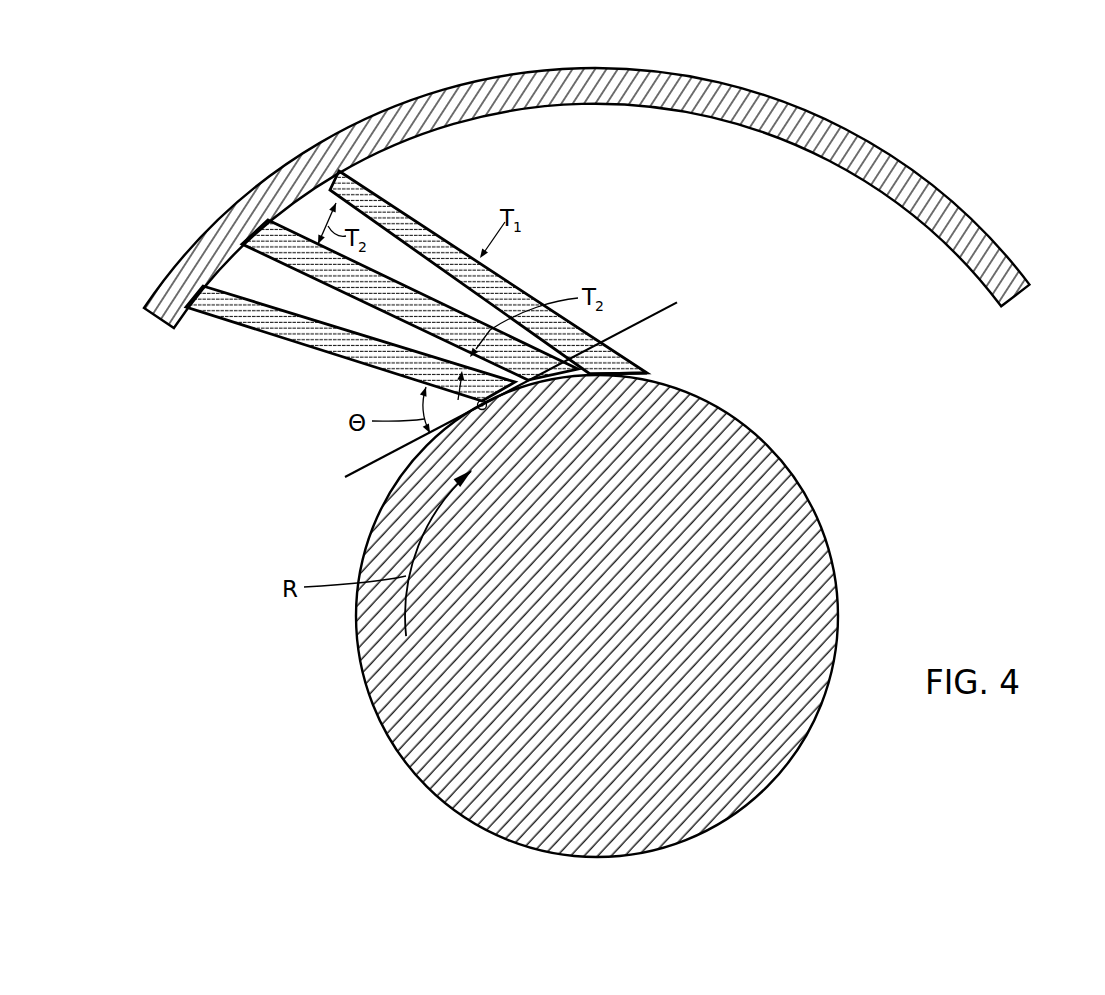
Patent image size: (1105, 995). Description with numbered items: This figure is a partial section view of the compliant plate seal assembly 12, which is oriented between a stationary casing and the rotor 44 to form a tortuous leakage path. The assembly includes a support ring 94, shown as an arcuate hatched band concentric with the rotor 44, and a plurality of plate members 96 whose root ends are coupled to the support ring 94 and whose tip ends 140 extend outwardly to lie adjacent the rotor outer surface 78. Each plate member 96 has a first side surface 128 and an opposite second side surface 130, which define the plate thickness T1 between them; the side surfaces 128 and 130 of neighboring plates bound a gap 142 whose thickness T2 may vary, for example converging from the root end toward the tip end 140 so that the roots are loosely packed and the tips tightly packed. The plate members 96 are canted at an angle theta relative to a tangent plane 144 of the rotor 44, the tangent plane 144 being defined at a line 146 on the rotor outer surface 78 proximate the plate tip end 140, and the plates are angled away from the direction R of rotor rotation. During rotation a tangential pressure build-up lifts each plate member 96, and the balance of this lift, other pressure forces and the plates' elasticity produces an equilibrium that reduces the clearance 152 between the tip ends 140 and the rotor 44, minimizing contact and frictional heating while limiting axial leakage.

The compliant plate seal assembly 12 is at (1027, 142).
The support ring 94 is at (897, 177).
The plate member 96 is at (384, 192).
The first side surface 128 is at (357, 268).
The second side surface 130 is at (390, 236).
The gap 142 is at (306, 210).
The tangent plane 144 is at (666, 303).
The line 146 is at (676, 302).
The tip end 140 is at (614, 354).
The clearance 152 is at (669, 376).
The outer surface 78 is at (742, 424).
The rotor 44 is at (610, 628).